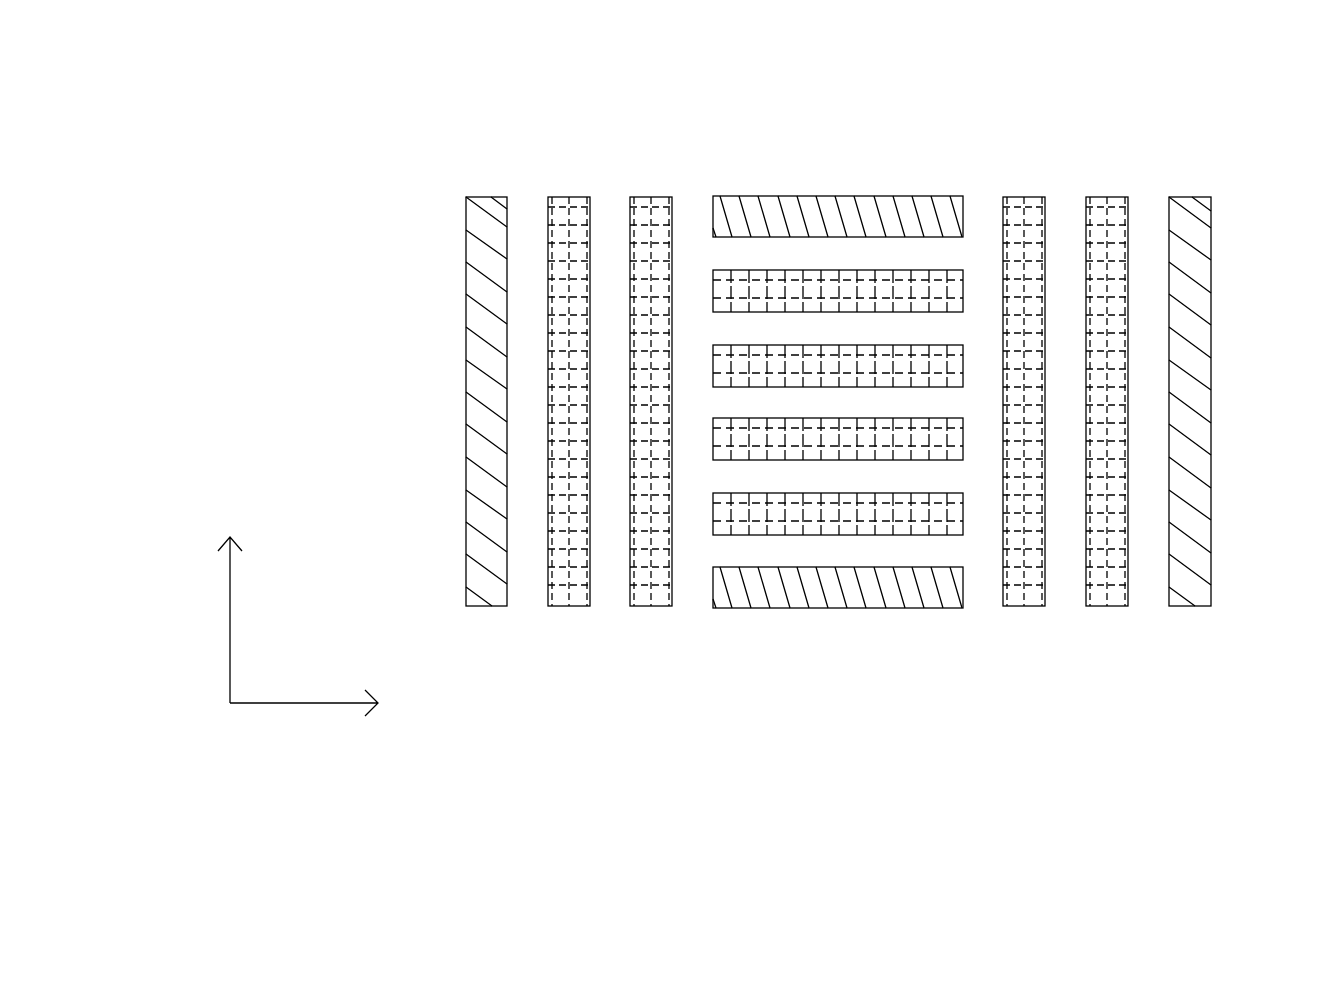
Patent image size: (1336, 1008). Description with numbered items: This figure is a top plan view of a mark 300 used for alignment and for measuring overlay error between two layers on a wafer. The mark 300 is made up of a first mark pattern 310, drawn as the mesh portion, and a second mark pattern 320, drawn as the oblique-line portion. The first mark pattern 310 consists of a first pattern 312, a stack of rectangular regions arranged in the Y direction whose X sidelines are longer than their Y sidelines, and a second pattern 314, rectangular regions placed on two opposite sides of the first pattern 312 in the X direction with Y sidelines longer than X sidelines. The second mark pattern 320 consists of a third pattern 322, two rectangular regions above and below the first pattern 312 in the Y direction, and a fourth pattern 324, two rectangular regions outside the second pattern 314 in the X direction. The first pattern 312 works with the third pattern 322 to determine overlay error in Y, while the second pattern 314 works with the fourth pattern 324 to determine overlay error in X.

The mark 300 is at (288, 80).
The first mark pattern 310 is at (1123, 180).
The first pattern 312 is at (963, 528).
The second pattern 314 is at (871, 380).
The second mark pattern 320 is at (813, 389).
The third pattern 322 is at (853, 196).
The fourth pattern 324 is at (467, 388).